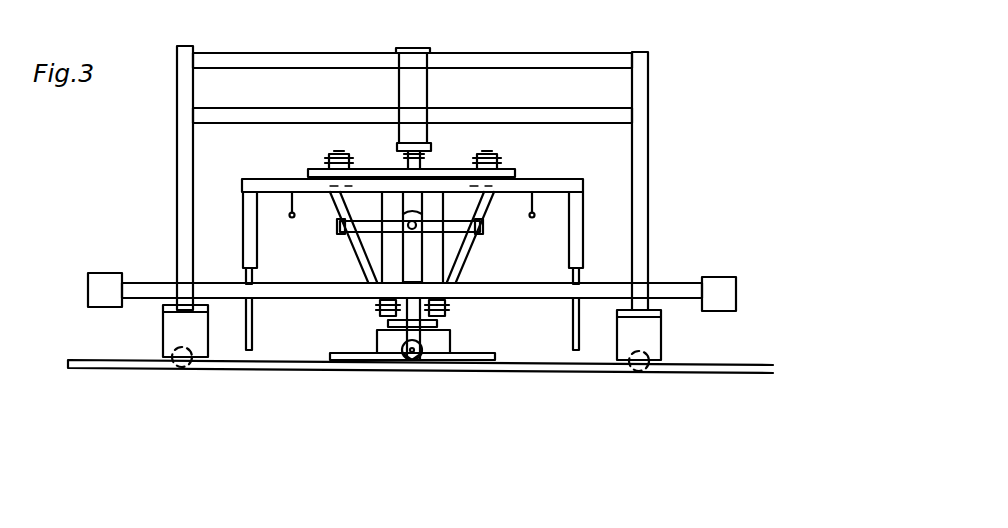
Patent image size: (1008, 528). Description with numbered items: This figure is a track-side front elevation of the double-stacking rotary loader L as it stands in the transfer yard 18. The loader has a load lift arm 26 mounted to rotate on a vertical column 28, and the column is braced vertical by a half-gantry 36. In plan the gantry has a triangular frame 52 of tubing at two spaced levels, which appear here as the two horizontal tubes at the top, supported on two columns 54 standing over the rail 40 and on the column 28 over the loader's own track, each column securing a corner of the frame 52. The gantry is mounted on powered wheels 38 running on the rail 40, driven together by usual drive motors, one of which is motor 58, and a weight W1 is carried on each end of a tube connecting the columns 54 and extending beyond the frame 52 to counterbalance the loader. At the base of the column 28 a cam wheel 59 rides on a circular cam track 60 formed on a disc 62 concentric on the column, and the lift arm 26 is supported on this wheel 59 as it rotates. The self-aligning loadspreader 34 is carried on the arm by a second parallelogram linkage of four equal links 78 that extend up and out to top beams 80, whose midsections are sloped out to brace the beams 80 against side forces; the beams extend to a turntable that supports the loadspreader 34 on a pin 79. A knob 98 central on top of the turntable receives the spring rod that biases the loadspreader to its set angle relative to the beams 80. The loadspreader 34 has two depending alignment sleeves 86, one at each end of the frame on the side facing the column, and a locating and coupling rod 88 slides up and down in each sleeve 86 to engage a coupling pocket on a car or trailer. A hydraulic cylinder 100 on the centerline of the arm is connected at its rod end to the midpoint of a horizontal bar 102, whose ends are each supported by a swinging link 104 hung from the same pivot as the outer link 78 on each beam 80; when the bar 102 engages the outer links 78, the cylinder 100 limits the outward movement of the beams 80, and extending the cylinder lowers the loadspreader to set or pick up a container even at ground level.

The transfer yard 18 is at (55, 332).
The load lift arm 26 is at (380, 310).
The vertical column 28 is at (399, 88).
The self-aligning loadspreader 34 is at (262, 179).
The half-gantry 36 is at (177, 104).
The wheels 38 is at (177, 367).
The rail 40 is at (92, 373).
The triangular frame 52 is at (590, 112).
The columns 54 is at (177, 157).
The drive motor 58 is at (166, 337).
The cam wheel 59 is at (412, 362).
The circular cam track 60 is at (334, 346).
The disc 62 is at (350, 362).
The links 78 is at (362, 256).
The pin 79 is at (425, 142).
The top beams 80 is at (340, 154).
The alignment sleeves 86 is at (243, 232).
The locating and coupling rod 88 is at (252, 310).
The knob 98 is at (400, 150).
The hydraulic cylinder 100 is at (410, 232).
The horizontal bar 102 is at (345, 234).
The swinging link 104 is at (335, 212).
The weight W1 is at (92, 273).
The double-stacking rotary loader L is at (125, 197).